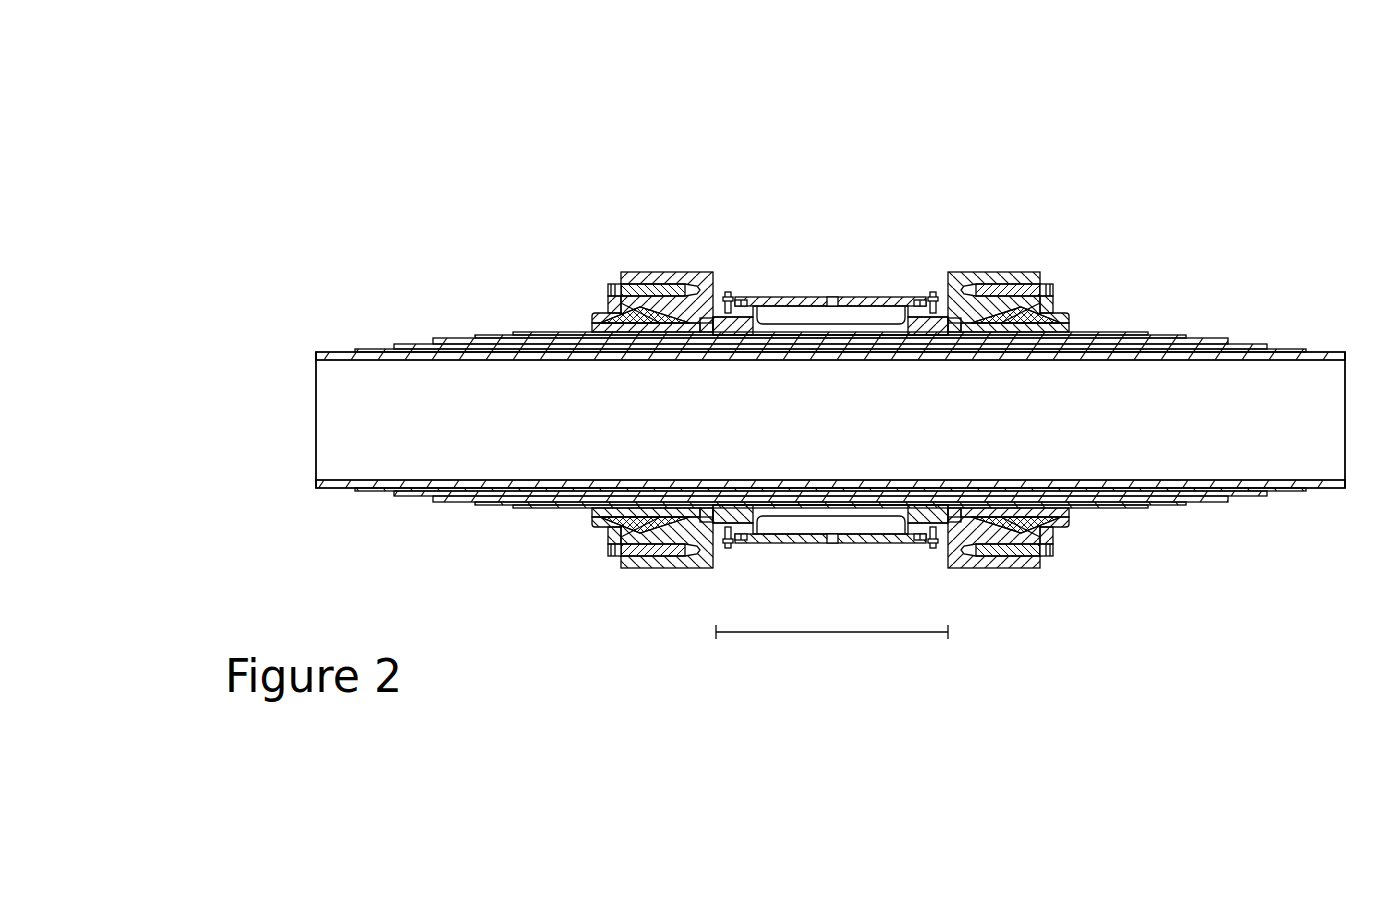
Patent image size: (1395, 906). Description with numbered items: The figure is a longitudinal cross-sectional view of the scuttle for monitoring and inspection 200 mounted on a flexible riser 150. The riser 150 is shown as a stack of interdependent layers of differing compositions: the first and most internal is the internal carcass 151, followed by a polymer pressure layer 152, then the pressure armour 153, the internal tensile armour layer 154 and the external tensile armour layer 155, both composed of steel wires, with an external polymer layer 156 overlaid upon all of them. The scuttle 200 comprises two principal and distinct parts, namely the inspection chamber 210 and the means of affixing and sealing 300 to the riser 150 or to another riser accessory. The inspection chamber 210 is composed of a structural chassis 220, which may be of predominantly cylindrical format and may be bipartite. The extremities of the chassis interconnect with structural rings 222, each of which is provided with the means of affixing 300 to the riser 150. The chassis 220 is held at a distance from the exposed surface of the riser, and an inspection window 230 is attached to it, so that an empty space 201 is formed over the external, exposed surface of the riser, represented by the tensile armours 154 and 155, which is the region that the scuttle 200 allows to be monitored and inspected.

The flexible riser 150 is at (277, 349).
The internal carcass 151 is at (1338, 350).
The polymer pressure layer 152 is at (1297, 493).
The pressure armour 153 is at (1258, 345).
The internal tensile armour layer 154 is at (1217, 500).
The external tensile armour layer 155 is at (1180, 338).
The external polymer layer 156 is at (1125, 508).
The scuttle for monitoring and inspection 200 is at (780, 165).
The empty space 201 is at (860, 313).
The inspection chamber 210 is at (832, 654).
The structural chassis 220 is at (927, 512).
The structural ring 222 is at (737, 307).
The inspection window 230 is at (850, 302).
The means of affixing and sealing 300 is at (596, 292).